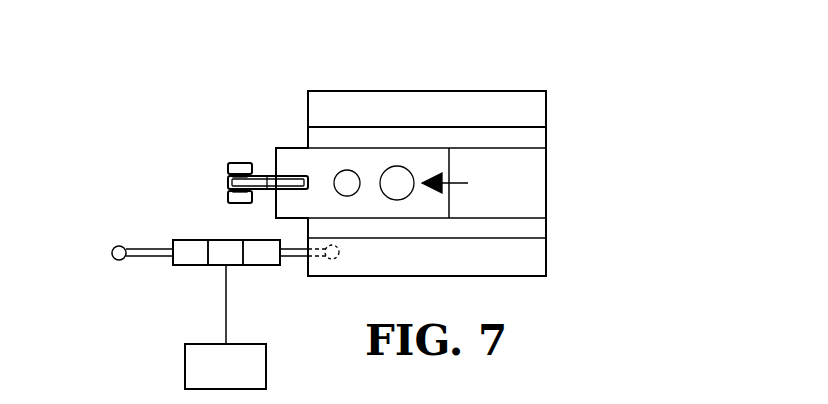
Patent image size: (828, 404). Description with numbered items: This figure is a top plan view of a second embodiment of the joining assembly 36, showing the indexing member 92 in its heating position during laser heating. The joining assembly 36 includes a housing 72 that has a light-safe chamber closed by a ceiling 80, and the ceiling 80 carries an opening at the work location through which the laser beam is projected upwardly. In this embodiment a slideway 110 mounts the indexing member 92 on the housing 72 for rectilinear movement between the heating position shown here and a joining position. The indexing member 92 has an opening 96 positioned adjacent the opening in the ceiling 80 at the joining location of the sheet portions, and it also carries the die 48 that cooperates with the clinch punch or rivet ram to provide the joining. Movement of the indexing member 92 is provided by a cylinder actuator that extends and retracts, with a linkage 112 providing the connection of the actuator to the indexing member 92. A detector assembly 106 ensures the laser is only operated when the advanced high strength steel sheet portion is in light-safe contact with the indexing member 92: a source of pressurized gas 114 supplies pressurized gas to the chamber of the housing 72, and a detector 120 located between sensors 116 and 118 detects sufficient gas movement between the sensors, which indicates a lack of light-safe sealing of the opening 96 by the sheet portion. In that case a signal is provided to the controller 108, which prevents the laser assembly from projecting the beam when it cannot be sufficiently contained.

The joining assembly 36 is at (583, 102).
The die 48 is at (346, 171).
The housing 72 is at (505, 278).
The ceiling 80 is at (547, 258).
The indexing member 92 is at (372, 160).
The opening 96 is at (396, 176).
The detector assembly 106 is at (205, 198).
The controller 108 is at (225, 327).
The slideway 110 is at (528, 137).
The linkage 112 is at (238, 163).
The source of pressurized gas 114 is at (118, 262).
The sensor 116 is at (192, 267).
The sensor 118 is at (260, 267).
The detector 120 is at (225, 239).